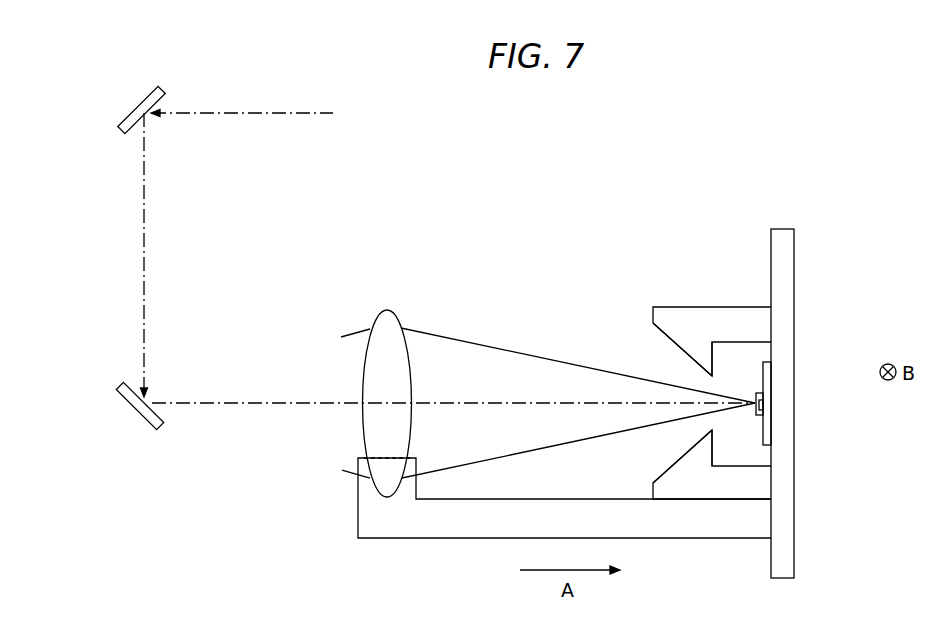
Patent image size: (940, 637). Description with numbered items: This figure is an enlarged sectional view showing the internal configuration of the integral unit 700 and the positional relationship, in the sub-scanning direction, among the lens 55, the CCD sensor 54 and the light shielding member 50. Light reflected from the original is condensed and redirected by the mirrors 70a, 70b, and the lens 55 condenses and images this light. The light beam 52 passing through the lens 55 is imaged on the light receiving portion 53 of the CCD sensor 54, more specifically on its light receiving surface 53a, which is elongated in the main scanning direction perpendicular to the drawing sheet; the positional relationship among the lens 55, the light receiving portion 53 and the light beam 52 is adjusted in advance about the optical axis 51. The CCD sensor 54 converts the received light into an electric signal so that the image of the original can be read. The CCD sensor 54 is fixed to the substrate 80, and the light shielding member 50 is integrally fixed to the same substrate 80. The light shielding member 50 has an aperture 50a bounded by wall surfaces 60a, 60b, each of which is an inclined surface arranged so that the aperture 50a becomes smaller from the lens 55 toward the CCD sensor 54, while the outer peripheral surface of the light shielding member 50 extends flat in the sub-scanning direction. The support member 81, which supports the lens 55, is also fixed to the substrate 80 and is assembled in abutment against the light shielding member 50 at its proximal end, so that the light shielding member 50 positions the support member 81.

The integral unit 700 is at (551, 214).
The mirror 70a is at (135, 408).
The mirror 70b is at (135, 112).
The substrate 80 is at (785, 253).
The support member 81 is at (356, 504).
The lens 55 is at (387, 311).
The light beam 52 is at (458, 337).
The optical axis 51 is at (513, 402).
The light shielding member 50 is at (697, 317).
The aperture 50a is at (713, 375).
The wall surface 60a is at (667, 351).
The wall surface 60b is at (668, 458).
The CCD sensor 54 is at (769, 372).
The light receiving surface 53a is at (758, 396).
The light receiving portion 53 is at (763, 412).